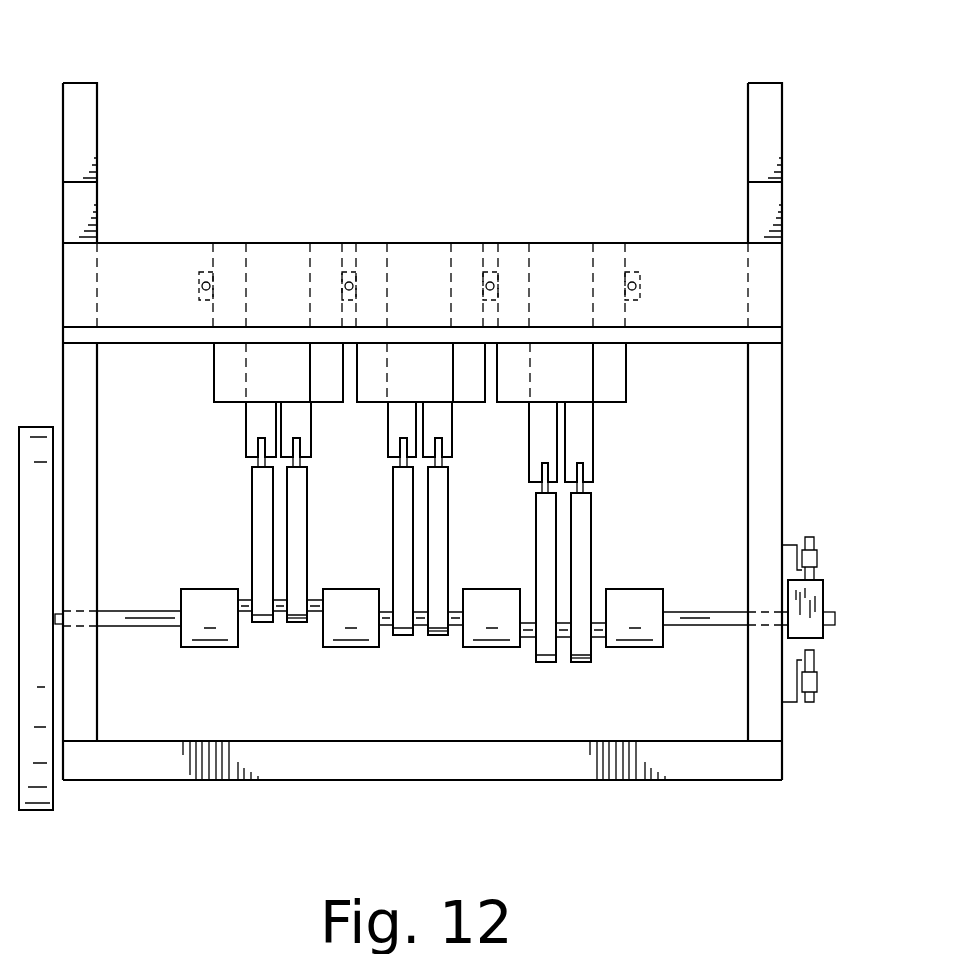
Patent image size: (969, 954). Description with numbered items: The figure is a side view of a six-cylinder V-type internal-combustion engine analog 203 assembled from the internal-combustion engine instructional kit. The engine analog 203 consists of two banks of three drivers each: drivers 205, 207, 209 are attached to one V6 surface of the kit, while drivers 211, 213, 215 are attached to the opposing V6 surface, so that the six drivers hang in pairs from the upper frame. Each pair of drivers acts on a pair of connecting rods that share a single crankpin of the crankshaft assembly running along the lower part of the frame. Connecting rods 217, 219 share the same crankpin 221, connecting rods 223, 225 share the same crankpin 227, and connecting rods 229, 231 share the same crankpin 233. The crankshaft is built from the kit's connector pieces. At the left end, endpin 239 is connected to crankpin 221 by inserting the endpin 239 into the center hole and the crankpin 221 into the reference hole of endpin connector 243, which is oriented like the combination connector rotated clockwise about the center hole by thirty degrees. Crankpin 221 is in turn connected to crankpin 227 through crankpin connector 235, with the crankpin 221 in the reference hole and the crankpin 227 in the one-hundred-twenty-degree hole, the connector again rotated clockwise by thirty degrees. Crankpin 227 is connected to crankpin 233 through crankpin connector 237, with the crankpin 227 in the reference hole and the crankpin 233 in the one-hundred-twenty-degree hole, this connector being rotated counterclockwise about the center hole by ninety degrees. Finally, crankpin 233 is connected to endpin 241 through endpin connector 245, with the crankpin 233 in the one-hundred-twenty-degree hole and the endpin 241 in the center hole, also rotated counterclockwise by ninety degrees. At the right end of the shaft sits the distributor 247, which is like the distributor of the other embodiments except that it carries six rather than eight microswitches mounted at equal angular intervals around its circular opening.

The 6-cylinder V-type engine analog 203 is at (847, 90).
The driver 205 is at (263, 652).
The driver 207 is at (403, 654).
The driver 209 is at (546, 683).
The driver 211 is at (296, 650).
The driver 213 is at (441, 650).
The driver 215 is at (580, 683).
The connecting rod 217 is at (252, 518).
The connecting rod 219 is at (307, 520).
The crankpin 221 is at (309, 623).
The connecting rod 223 is at (395, 563).
The connecting rod 225 is at (448, 565).
The crankpin 227 is at (452, 628).
The connecting rod 229 is at (536, 540).
The connecting rod 231 is at (591, 530).
The crankpin 233 is at (592, 640).
The crankpin connector 235 is at (350, 589).
The crankpin connector 237 is at (490, 589).
The endpin 239 is at (143, 627).
The endpin 241 is at (715, 612).
The endpin connector 243 is at (205, 589).
The endpin connector 245 is at (635, 589).
The distributor 247 is at (849, 583).